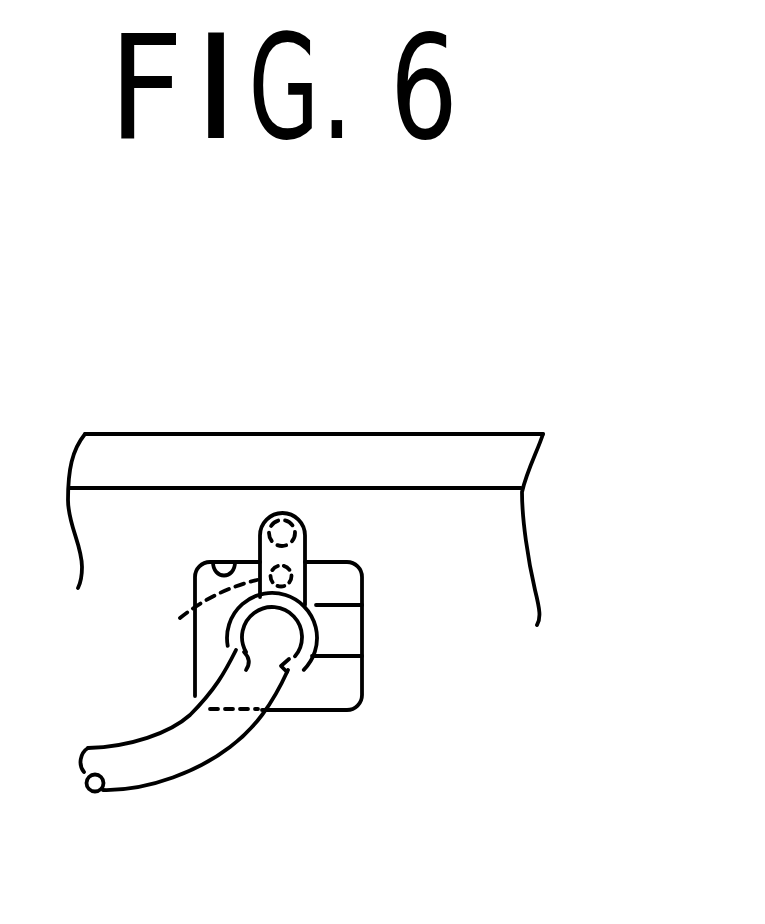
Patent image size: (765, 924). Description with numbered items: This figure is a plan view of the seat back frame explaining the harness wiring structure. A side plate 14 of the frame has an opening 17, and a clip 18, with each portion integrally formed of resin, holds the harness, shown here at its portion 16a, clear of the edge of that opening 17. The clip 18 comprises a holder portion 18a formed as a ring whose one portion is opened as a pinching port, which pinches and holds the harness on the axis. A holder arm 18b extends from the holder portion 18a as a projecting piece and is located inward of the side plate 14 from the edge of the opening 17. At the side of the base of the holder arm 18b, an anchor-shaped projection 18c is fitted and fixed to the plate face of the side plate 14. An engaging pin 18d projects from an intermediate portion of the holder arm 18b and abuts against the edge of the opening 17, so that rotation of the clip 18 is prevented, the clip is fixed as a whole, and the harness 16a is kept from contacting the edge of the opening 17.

The side plate 14 is at (347, 452).
The tube 16a is at (193, 750).
The opening 17 is at (213, 563).
The clip 18 is at (341, 453).
The holder portion 18a is at (320, 628).
The holder arm 18b is at (297, 414).
The projection 18c is at (260, 518).
The engaging pin 18d is at (180, 618).